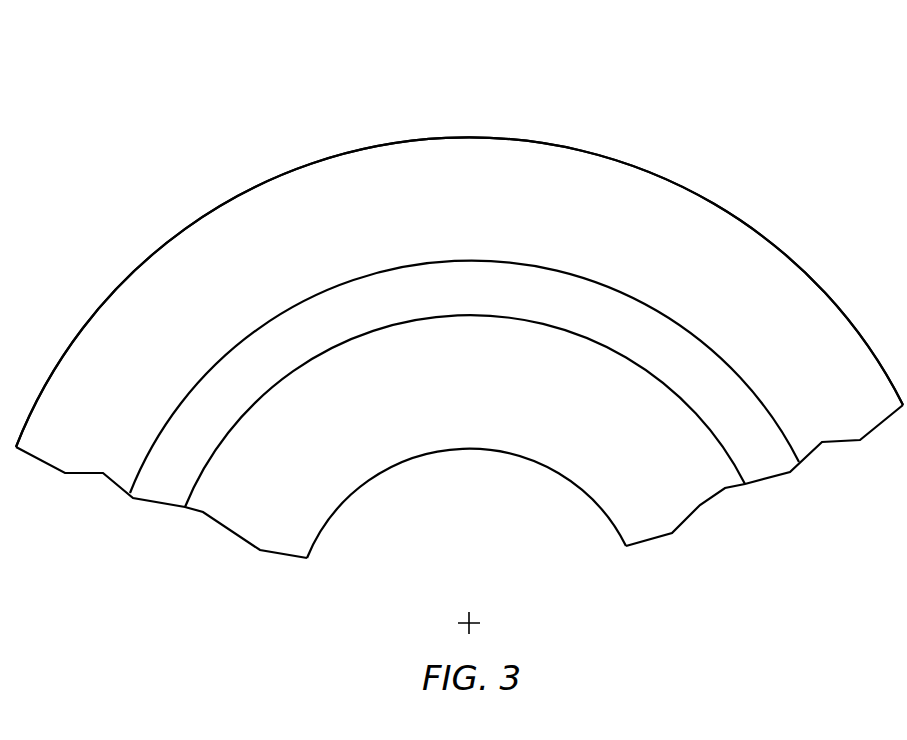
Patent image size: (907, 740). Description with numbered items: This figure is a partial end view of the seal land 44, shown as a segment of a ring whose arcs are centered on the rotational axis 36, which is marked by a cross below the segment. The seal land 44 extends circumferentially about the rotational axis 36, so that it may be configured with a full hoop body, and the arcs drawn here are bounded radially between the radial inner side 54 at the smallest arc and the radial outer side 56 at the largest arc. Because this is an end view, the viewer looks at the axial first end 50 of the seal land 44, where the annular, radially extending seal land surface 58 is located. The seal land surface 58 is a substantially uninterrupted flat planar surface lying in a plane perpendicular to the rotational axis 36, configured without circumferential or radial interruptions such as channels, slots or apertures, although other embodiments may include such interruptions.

The rotational axis 36 is at (470, 622).
The seal land 44 is at (672, 103).
The axial first end 50 is at (772, 288).
The radial inner side 54 is at (469, 455).
The radial outer side 56 is at (469, 136).
The seal land surface 58 is at (482, 202).